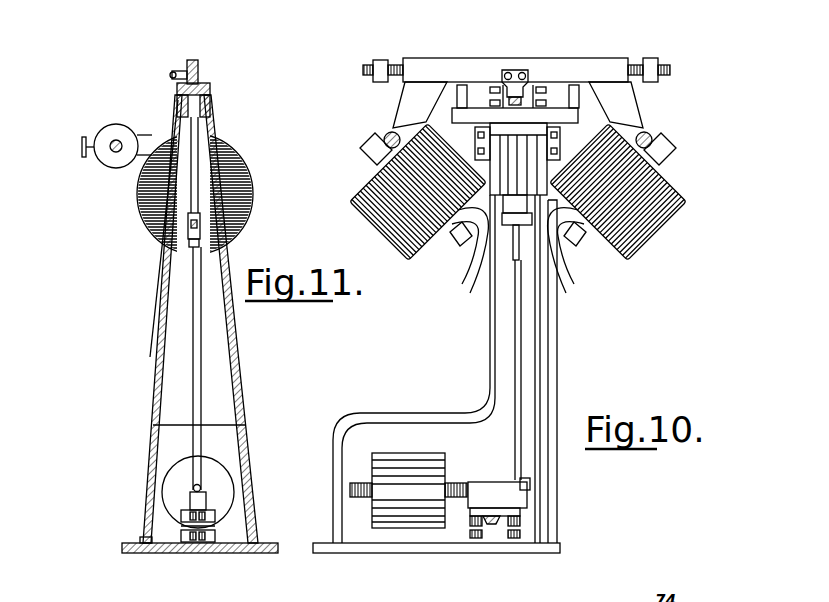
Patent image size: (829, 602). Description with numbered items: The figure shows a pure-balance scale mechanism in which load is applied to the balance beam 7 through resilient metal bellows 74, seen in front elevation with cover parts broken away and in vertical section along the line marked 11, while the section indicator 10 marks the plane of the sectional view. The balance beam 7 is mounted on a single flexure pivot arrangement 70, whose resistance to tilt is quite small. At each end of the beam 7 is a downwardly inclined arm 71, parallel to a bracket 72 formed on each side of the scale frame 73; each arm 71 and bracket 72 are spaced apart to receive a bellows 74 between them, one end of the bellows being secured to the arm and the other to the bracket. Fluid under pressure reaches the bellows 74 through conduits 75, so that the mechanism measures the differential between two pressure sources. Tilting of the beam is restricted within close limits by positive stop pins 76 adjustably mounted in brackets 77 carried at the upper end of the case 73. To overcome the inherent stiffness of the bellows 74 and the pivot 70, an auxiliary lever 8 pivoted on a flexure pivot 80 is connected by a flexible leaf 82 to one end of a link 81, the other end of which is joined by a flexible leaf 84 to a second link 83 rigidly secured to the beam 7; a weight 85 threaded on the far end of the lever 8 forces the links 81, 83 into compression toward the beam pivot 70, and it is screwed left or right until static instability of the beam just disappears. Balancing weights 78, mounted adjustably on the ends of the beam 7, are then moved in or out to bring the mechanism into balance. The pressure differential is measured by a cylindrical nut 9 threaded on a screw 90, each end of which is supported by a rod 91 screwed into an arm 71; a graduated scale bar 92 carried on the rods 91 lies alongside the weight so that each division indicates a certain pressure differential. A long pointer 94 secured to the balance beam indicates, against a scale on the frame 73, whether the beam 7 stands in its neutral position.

In FIG. 11, the balance beam 7 is at (199, 71).
In FIG. 10, the balance beam 7 is at (558, 72).
In FIG. 11, the auxiliary lever 8 is at (206, 505).
In FIG. 10, the auxiliary lever 8 is at (486, 492).
In FIG. 11, the cylindrical nut 9 is at (116, 125).
In FIG. 11, the section line 10- 10 is at (139, 43).
In FIG. 10, the section line 11- 11 is at (530, 23).
In FIG. 10, the flexure pivot arrangement 70 is at (512, 85).
In FIG. 10, the downwardly inclined arm 71 is at (418, 97).
In FIG. 10, the bracket 72 is at (447, 238).
In FIG. 11, the scale frame 73 is at (152, 392).
In FIG. 10, the scale frame 73 is at (546, 372).
In FIG. 11, the metal bellows 74 is at (250, 167).
In FIG. 10, the metal bellows 74 is at (372, 198).
In FIG. 10, the conduit 75 is at (470, 289).
In FIG. 10, the stop pin 76 is at (466, 86).
In FIG. 10, the bracket 77 is at (470, 117).
In FIG. 10, the balancing weight 78 is at (381, 62).
In FIG. 11, the flexure pivot 80 is at (212, 527).
In FIG. 10, the flexure pivot 80 is at (492, 530).
In FIG. 11, the link 81 is at (193, 390).
In FIG. 10, the link 81 is at (521, 425).
In FIG. 11, the flexible leaf 82 is at (193, 486).
In FIG. 10, the flexible leaf 82 is at (521, 478).
In FIG. 11, the second link 83 is at (194, 131).
In FIG. 10, the second link 83 is at (520, 148).
In FIG. 11, the flexible leaf 84 is at (190, 250).
In FIG. 10, the flexible leaf 84 is at (514, 238).
In FIG. 11, the weight 85 is at (207, 463).
In FIG. 10, the weight 85 is at (408, 490).
In FIG. 11, the screw 90 is at (110, 148).
In FIG. 11, the rod 91 is at (148, 137).
In FIG. 10, the rod 91 is at (650, 138).
In FIG. 11, the graduated scale bar 92 is at (82, 141).
In FIG. 11, the pointer 94 is at (157, 272).